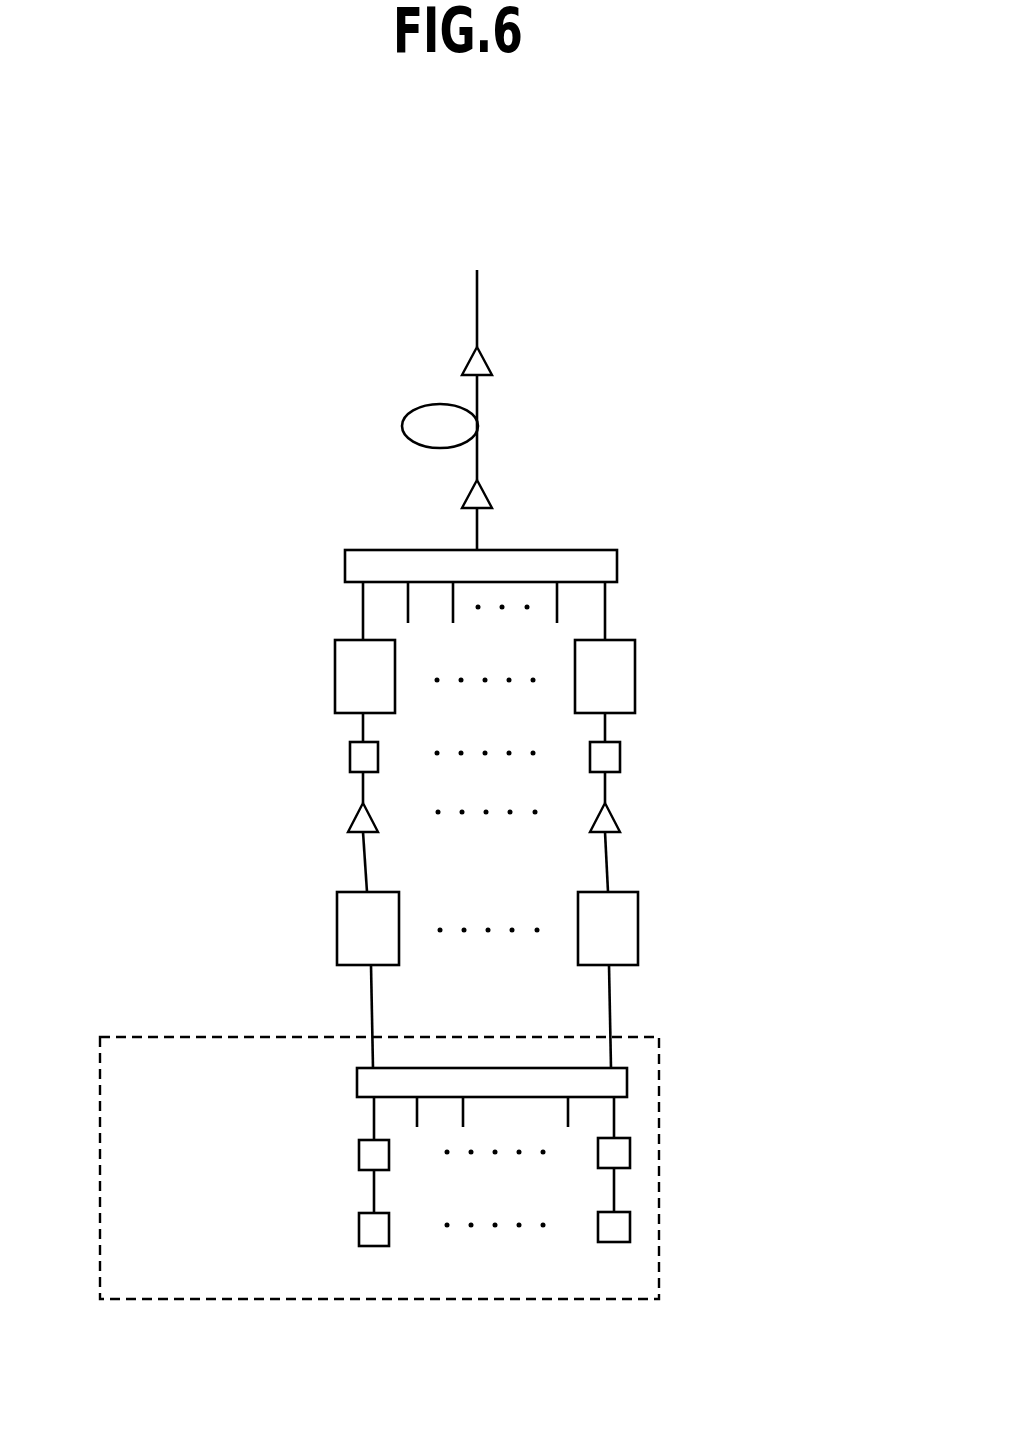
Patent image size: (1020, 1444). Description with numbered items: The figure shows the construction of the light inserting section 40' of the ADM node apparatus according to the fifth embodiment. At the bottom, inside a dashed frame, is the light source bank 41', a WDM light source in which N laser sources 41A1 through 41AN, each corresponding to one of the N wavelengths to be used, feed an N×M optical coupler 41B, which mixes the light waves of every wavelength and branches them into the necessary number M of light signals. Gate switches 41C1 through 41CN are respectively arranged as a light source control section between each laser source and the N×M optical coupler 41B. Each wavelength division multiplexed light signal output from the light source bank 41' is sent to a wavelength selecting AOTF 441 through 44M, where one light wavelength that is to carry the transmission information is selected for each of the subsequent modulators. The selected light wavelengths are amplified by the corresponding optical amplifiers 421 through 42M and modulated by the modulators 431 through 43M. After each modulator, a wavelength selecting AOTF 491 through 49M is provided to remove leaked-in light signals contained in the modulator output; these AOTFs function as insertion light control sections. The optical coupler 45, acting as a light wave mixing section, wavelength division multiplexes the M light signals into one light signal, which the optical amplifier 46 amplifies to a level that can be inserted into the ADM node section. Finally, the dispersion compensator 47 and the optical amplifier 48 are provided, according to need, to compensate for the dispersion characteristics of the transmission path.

The light inserting section 40' is at (449, 752).
The optical amplifier 48 is at (487, 358).
The dispersion compensator 47 is at (414, 444).
The optical amplifier 46 is at (490, 496).
The optical coupler 45 is at (575, 550).
The wavelength selecting AOTF 491 is at (395, 695).
The wavelength selecting AOTF 49M is at (635, 695).
The modulator 431 is at (378, 757).
The modulator 43M is at (620, 760).
The optical amplifier 421 is at (375, 822).
The optical amplifier 42M is at (617, 822).
The wavelength selecting AOTF 441 is at (399, 945).
The wavelength selecting AOTF 44M is at (638, 945).
The light source bank 41' is at (379, 1186).
The N×M optical coupler 41B is at (357, 1097).
The gate switch 41C1 is at (359, 1170).
The gate switch 41CN is at (598, 1168).
The laser source 41A1 is at (359, 1246).
The laser source 41AN is at (598, 1242).